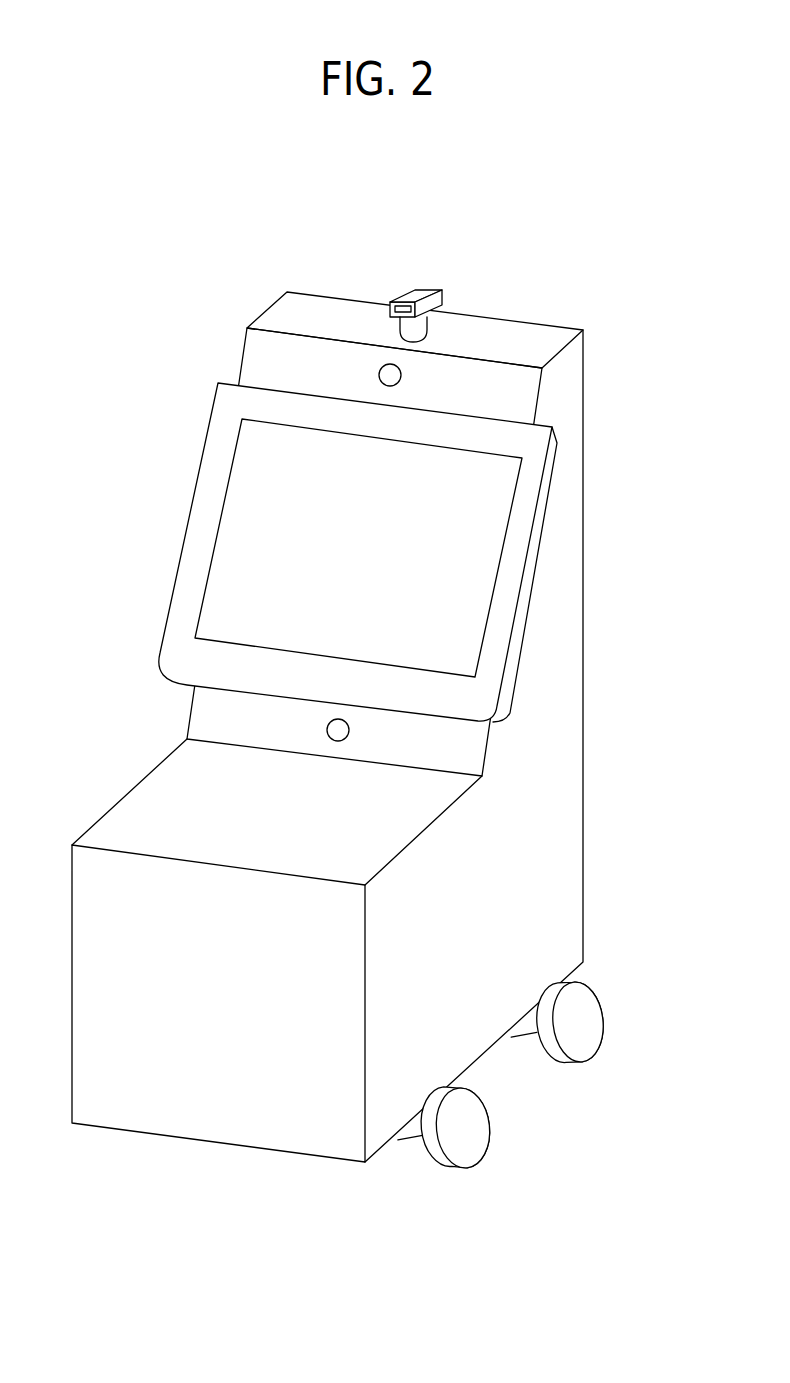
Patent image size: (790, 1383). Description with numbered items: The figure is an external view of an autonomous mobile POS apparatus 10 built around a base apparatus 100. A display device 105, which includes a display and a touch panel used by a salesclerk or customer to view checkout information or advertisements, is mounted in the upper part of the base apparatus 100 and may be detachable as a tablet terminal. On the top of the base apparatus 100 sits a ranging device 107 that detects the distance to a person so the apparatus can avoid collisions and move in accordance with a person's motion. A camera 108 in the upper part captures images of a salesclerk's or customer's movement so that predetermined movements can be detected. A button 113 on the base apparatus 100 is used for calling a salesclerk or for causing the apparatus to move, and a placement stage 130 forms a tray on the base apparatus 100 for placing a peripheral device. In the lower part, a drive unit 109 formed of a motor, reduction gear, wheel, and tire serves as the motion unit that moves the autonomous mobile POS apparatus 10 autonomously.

The autonomous mobile POS apparatus 10 is at (526, 230).
The base apparatus 100 is at (582, 757).
The display device 105 is at (187, 520).
The ranging device 107 is at (402, 293).
The camera 108 is at (378, 379).
The drive unit 109 is at (408, 1133).
The button 113 is at (327, 730).
The placement stage 130 is at (128, 817).